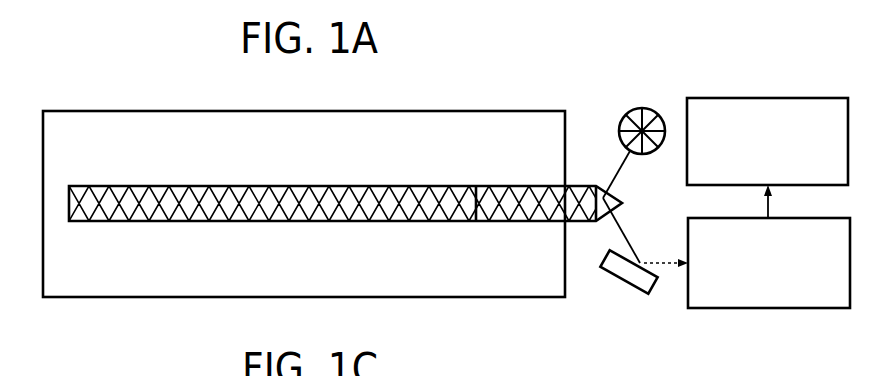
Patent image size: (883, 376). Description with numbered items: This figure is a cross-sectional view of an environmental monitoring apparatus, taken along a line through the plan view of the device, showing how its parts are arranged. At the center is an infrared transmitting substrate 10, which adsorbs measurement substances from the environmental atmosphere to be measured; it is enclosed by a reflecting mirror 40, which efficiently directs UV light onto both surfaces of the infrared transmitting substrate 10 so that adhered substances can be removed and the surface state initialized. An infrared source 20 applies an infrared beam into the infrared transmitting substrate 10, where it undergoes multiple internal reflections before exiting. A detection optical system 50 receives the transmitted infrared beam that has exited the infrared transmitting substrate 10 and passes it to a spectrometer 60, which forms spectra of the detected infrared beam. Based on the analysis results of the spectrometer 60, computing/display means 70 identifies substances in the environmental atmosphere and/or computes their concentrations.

The infrared transmitting substrate 10 is at (277, 223).
The infrared source 20 is at (647, 108).
The reflecting mirror 40 is at (150, 111).
The detection optical system 50 is at (623, 285).
The spectrometer 60 is at (753, 308).
The computing/display means 70 is at (757, 98).